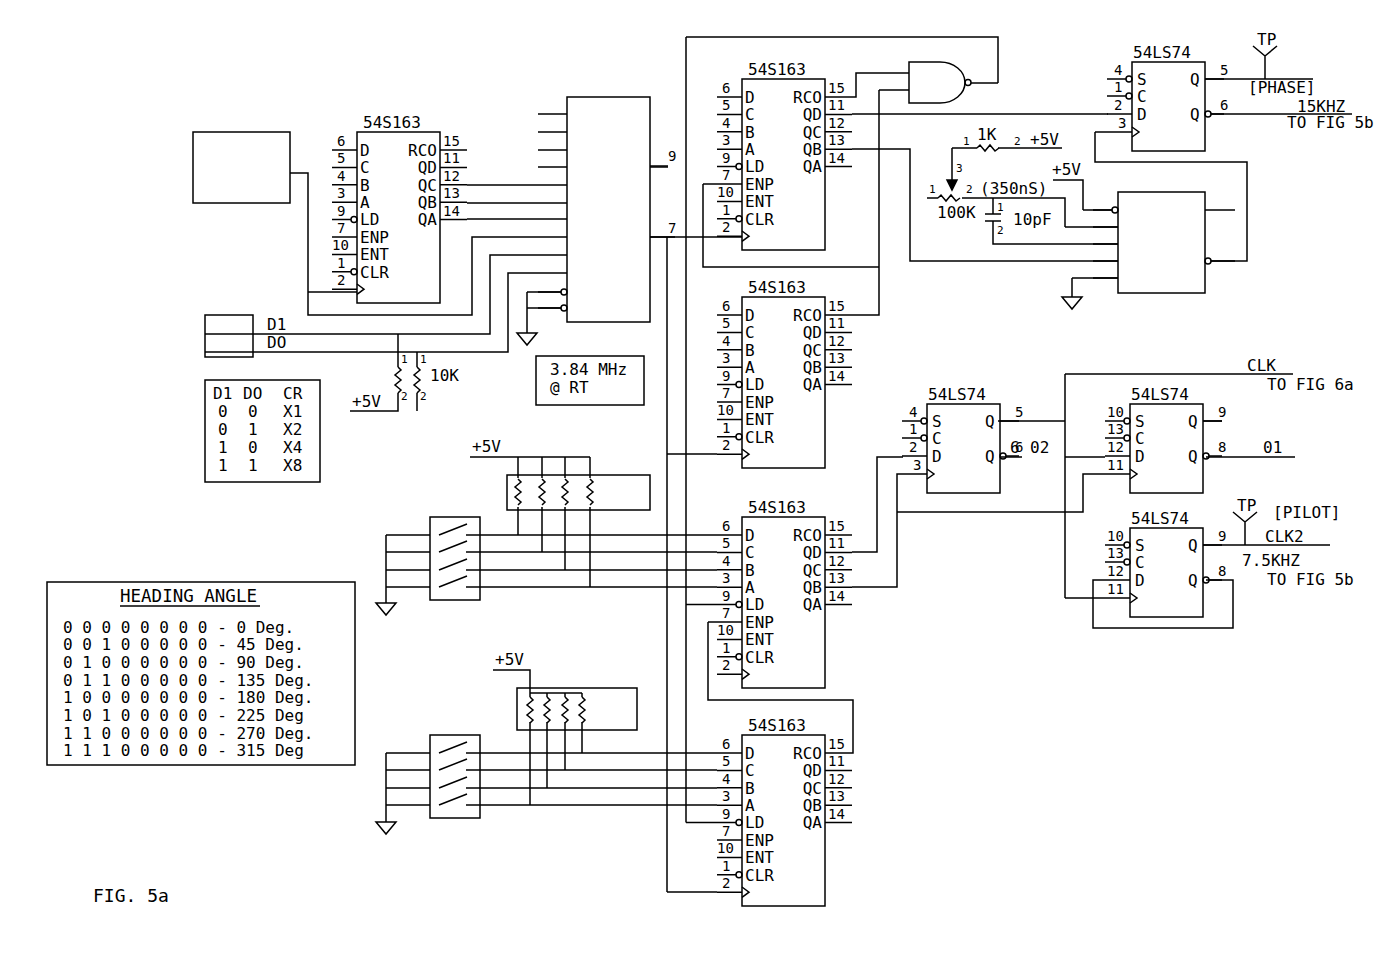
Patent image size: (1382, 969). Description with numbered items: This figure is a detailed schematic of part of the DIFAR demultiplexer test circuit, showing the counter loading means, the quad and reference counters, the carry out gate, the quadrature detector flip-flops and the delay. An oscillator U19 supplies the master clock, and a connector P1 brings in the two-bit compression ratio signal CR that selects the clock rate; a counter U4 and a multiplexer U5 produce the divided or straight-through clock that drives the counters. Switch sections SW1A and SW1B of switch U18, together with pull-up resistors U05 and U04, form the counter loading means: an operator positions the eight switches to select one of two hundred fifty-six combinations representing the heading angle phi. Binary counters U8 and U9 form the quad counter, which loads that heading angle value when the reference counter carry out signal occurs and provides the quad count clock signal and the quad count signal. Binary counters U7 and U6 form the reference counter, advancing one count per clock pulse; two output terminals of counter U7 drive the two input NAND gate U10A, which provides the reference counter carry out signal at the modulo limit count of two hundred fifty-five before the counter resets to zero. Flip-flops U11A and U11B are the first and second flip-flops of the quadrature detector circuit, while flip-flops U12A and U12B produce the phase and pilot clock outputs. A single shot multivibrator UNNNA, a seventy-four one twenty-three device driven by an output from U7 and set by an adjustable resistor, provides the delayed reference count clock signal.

The 30.72 MHz oscillator U19 is at (241, 167).
The connector P1 (B43 D1, B47 D0) P1 is at (229, 327).
The 54S163 counter U4 is at (399, 208).
The 54S153 multiplexer U5 is at (606, 200).
The binary counter U7 is at (784, 155).
The binary counter U6 is at (784, 373).
The binary counter U9 is at (784, 593).
The binary counter U8 is at (784, 811).
The two input NAND gate U10A is at (940, 73).
The 54LS74 flip-flop (PHASE output) U12A is at (1167, 97).
The first flip-flop U11A is at (962, 439).
The second flip-flop U11B is at (1165, 439).
The 54LS74 flip-flop (CLK2 PILOT output) U12B is at (1165, 563).
The 74123 monostable multivibrator UNNNA is at (1164, 233).
The pull-up resistors U05 is at (578, 493).
The pull-up resistors U04 is at (577, 707).
The DIP switch U18 (SW1A/SW1B) U18 is at (443, 666).
The manually selected switches SW1A is at (443, 557).
The manually selected switches SW1B is at (443, 775).